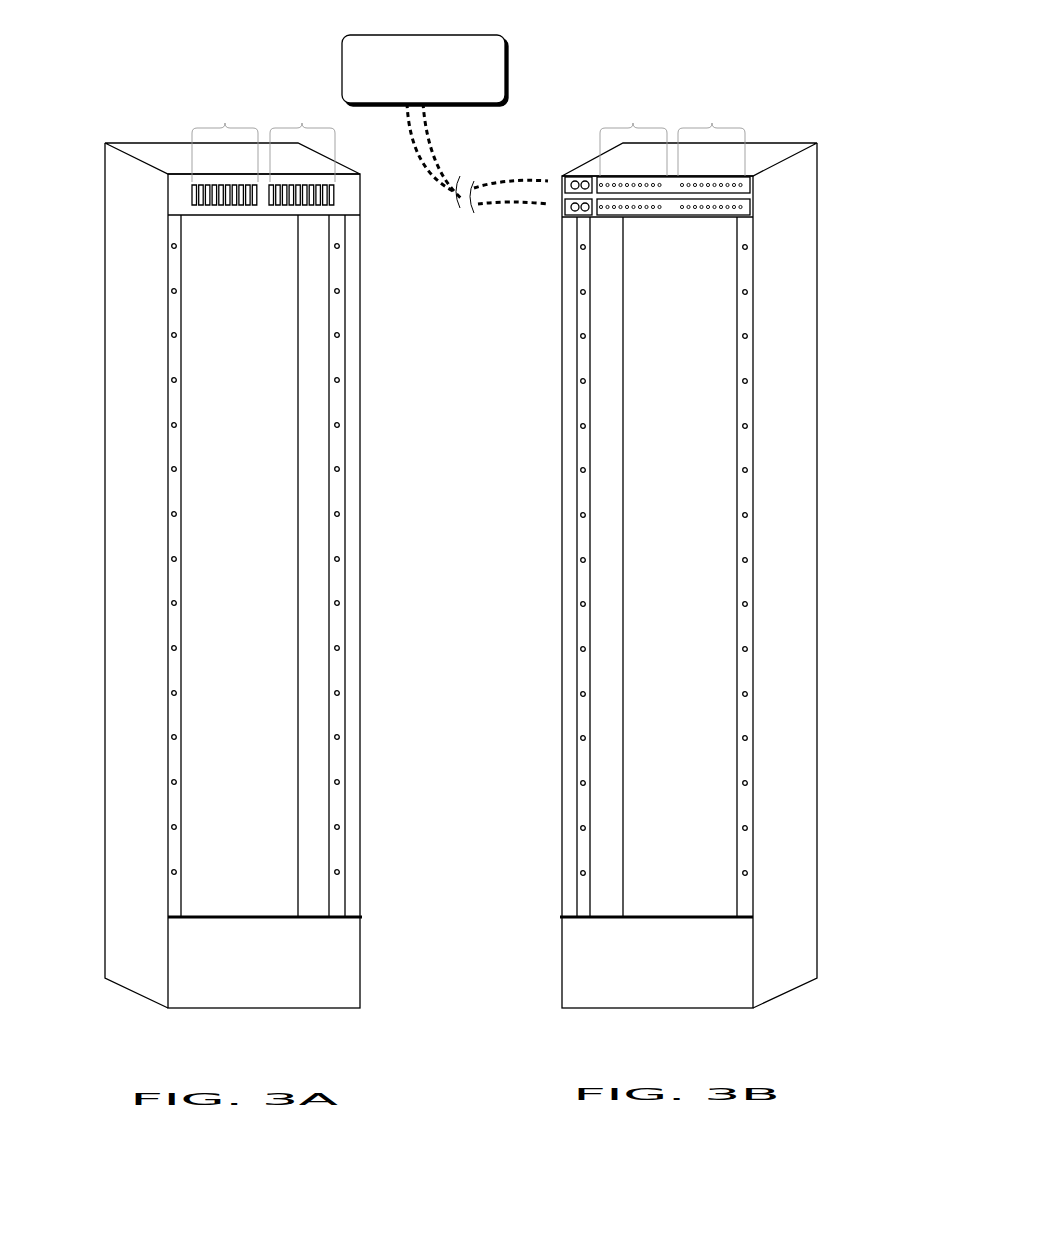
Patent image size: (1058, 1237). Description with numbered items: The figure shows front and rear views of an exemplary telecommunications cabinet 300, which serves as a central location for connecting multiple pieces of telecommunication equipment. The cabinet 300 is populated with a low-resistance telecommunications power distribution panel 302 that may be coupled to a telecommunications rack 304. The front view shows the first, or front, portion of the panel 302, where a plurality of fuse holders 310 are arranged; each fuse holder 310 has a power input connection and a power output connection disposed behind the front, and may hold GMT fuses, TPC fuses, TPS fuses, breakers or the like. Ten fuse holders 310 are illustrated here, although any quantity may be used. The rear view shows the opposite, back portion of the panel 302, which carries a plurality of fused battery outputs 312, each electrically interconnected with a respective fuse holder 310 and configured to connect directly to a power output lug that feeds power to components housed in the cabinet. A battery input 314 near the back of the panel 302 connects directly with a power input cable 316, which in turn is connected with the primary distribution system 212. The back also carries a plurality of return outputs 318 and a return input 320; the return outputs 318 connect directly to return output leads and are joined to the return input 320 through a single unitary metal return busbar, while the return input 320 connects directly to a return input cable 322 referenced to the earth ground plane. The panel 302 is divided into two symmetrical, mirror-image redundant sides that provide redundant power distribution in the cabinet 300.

In FIG. 3A, the telecommunications cabinet 300 is at (133, 42).
In FIG. 3A, the low-resistance telecommunications power distribution panel 302 is at (168, 195).
In FIG. 3B, the low-resistance telecommunications power distribution panel 302 is at (755, 197).
In FIG. 3A, the telecommunications rack 304 is at (175, 308).
In FIG. 3B, the telecommunications rack 304 is at (585, 327).
In FIG. 3A, the fuse holder 310 is at (342, 193).
In FIG. 3B, the fused battery output 312 is at (698, 196).
In FIG. 3B, the battery input 314 is at (581, 178).
In FIG. 3B, the power input cable 316 is at (548, 176).
In FIG. 3B, the return output 318 is at (698, 217).
In FIG. 3B, the return input 320 is at (578, 216).
In FIG. 3B, the return input cable 322 is at (548, 210).
In FIG. 3B, the primary distribution system 212 is at (425, 70).